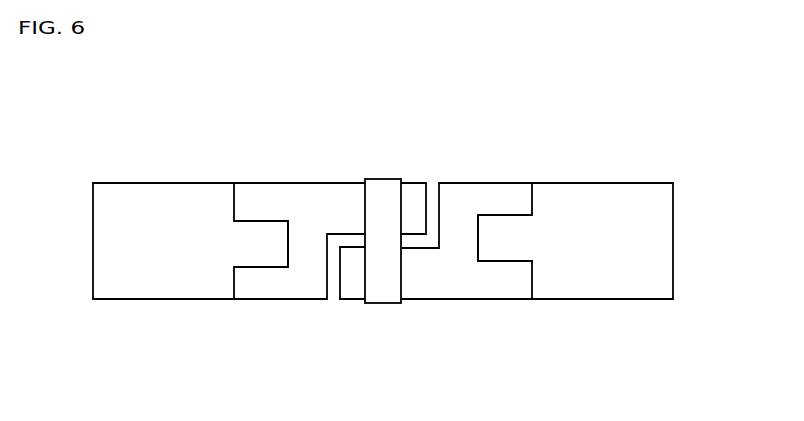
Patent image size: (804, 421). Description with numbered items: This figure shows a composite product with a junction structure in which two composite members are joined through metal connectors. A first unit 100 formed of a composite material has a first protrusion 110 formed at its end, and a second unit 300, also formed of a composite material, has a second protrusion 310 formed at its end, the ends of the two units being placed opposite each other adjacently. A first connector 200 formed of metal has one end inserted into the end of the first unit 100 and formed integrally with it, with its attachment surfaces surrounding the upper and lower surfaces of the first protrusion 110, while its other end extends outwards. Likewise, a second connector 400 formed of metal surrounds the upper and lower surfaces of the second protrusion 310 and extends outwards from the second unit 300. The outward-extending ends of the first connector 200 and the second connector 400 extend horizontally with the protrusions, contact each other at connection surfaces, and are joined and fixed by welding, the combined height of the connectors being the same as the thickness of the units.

The first unit 100 is at (147, 183).
The first protrusion 110 is at (263, 240).
The first connector 200 is at (283, 300).
The second unit 300 is at (630, 183).
The second protrusion 310 is at (500, 235).
The second connector 400 is at (468, 300).